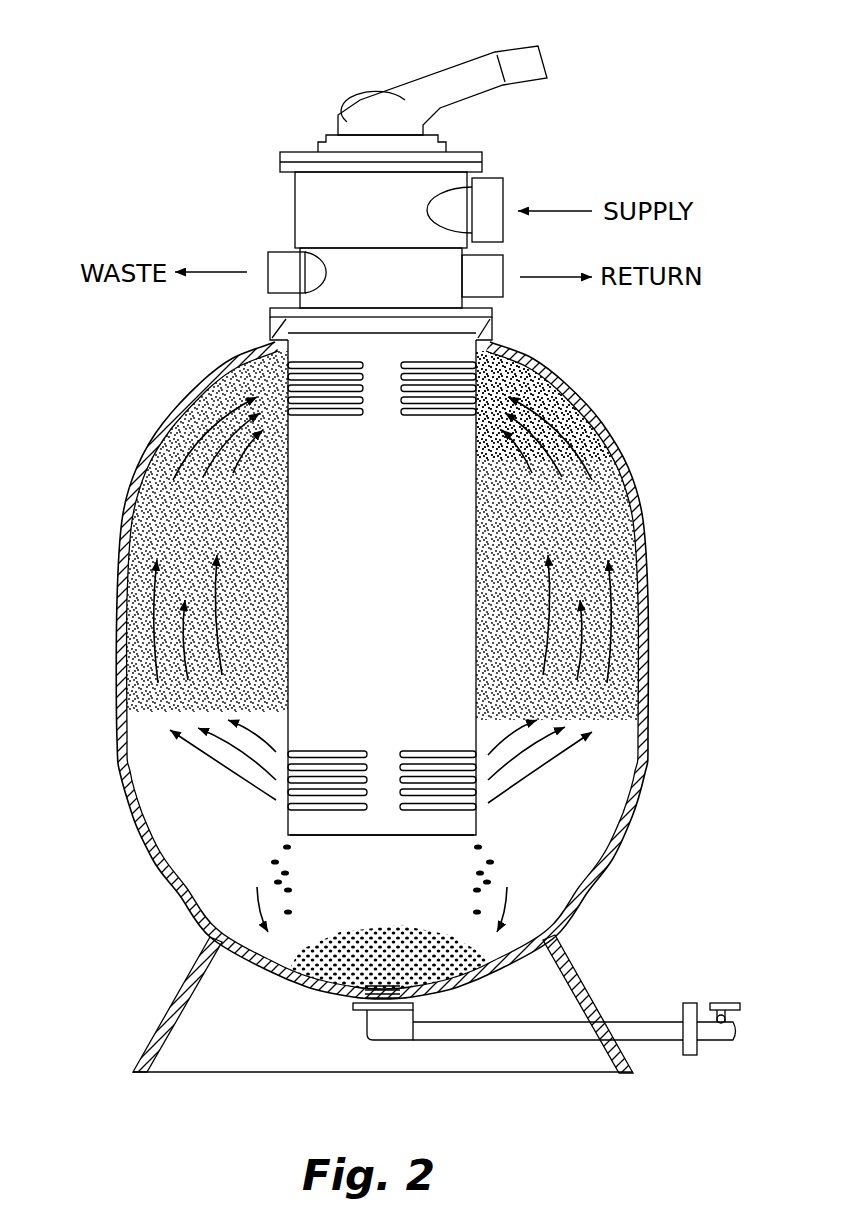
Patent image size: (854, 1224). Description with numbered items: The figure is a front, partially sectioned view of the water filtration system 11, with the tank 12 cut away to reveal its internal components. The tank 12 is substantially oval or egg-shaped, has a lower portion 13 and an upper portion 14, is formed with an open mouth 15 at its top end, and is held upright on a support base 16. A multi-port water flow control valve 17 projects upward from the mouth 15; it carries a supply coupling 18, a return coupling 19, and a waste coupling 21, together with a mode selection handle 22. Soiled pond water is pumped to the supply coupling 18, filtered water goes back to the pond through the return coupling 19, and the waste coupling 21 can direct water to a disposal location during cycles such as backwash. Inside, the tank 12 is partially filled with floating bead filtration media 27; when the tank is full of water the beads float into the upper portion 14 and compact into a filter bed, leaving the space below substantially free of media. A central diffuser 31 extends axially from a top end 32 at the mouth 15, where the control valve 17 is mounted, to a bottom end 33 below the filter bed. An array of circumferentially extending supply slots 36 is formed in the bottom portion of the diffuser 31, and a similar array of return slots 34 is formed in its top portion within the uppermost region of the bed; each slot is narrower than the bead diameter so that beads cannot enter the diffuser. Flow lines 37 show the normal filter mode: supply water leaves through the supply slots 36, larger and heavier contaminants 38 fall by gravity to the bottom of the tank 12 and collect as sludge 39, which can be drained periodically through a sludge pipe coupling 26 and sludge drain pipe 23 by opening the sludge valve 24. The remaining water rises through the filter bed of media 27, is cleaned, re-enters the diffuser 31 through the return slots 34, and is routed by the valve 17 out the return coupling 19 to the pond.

The filtration system 11 is at (690, 385).
The tank 12 is at (665, 590).
The lower portion 13 is at (625, 847).
The upper portion 14 is at (607, 437).
The mouth 15 is at (275, 328).
The support base 16 is at (173, 990).
The multi-port water flow control valve 17 is at (175, 90).
The supply coupling 18 is at (497, 190).
The return coupling 19 is at (497, 287).
The waste coupling 21 is at (283, 258).
The mode selection handle 22 is at (432, 90).
The sludge drain pipe 23 is at (556, 1033).
The sludge valve 24 is at (735, 985).
The sludge pipe coupling 26 is at (362, 1008).
The floating bead filtration media 27 is at (152, 505).
The central diffuser 31 is at (447, 665).
The top end 32 is at (465, 345).
The bottom end 33 is at (470, 826).
The return slots 34 is at (432, 395).
The supply slots 36 is at (417, 793).
The flow lines 37 is at (145, 632).
The contaminants 38 is at (235, 876).
The sludge 39 is at (330, 960).